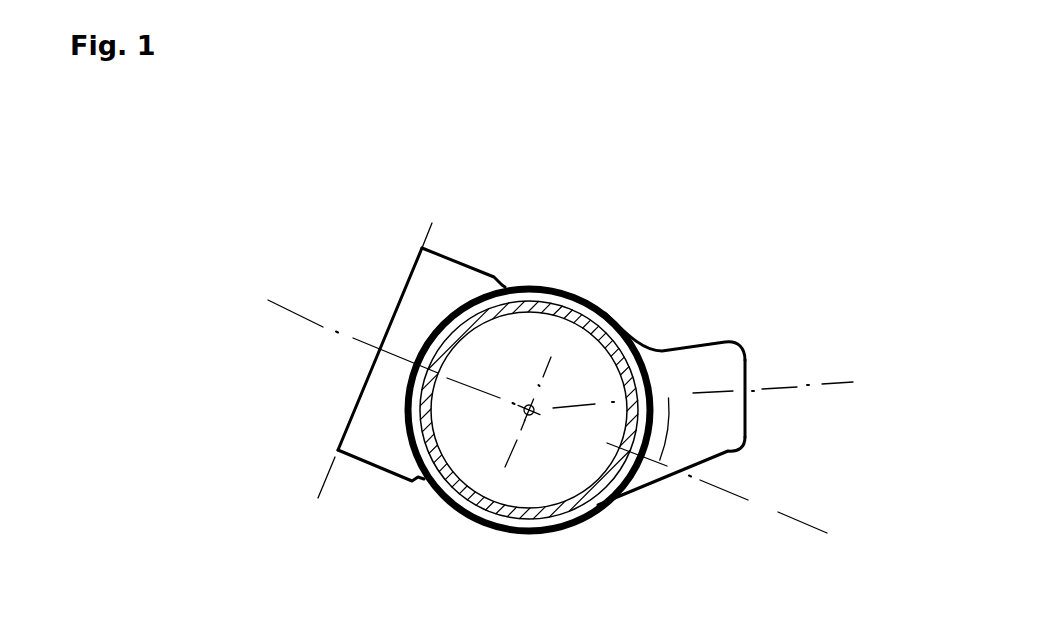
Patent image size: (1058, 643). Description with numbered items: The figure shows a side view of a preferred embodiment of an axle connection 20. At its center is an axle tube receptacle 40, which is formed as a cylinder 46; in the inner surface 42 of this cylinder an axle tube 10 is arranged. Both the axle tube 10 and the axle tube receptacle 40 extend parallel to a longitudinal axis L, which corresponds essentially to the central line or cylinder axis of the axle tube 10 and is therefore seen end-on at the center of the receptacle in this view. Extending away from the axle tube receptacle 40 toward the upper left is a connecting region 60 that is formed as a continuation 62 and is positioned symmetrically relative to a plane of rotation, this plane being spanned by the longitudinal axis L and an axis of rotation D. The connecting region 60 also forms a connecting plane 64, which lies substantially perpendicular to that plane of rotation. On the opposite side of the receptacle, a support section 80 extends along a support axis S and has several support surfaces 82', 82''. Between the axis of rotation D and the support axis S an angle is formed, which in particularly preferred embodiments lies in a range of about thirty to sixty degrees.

The axle connection 20 is at (322, 198).
The axle tube 10 is at (529, 398).
The axle tube receptacle 40 is at (576, 354).
The cylinder 46 is at (592, 312).
The inner surface 42 is at (432, 416).
The connecting region 60 is at (362, 320).
The continuation 62 is at (437, 268).
The connecting plane 64 is at (430, 223).
The support section 80 is at (736, 392).
The support surface 82' is at (675, 407).
The support surface 82'' is at (809, 355).
The axis of rotation D is at (295, 314).
The support axis S is at (847, 390).
The longitudinal axis L is at (530, 418).